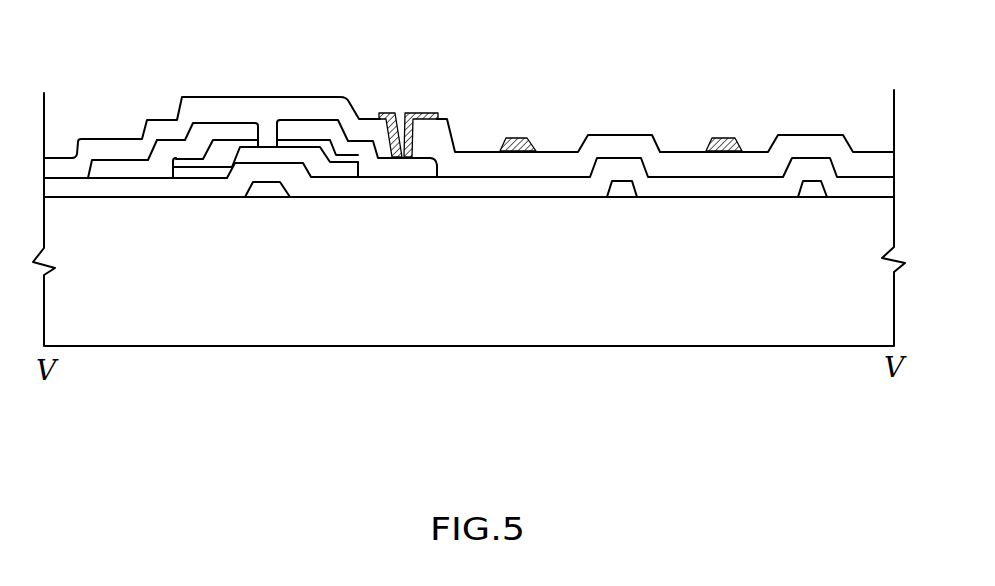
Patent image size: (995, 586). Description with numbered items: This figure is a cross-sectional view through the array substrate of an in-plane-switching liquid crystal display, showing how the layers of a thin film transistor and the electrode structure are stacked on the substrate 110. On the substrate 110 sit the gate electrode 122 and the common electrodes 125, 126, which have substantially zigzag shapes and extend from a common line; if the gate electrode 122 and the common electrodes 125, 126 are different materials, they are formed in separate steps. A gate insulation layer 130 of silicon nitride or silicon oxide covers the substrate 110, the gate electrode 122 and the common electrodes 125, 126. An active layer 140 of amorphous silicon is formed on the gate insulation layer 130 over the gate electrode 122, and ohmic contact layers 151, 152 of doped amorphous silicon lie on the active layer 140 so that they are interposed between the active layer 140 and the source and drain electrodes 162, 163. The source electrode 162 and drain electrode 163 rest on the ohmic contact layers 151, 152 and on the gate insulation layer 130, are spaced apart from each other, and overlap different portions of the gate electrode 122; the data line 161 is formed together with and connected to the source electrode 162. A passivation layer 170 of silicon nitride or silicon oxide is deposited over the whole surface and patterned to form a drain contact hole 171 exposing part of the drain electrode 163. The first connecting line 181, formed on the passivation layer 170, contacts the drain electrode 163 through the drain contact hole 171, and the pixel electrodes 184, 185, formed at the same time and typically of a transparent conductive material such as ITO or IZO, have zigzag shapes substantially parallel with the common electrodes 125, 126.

The substrate 110 is at (503, 328).
The gate electrode 122 is at (265, 188).
The common electrode 125 is at (623, 193).
The common electrode 126 is at (813, 187).
The gate insulation layer 130 is at (403, 187).
The active layer 140 is at (265, 155).
The ohmic contact layer 151 is at (176, 158).
The ohmic contact layer 152 is at (294, 140).
The data line 161 is at (145, 170).
The source electrode 162 is at (221, 127).
The drain electrode 163 is at (322, 125).
The passivation layer 170 is at (85, 139).
The drain contact hole 171 is at (400, 102).
The first connecting line 181 is at (433, 111).
The pixel electrode 184 is at (514, 139).
The pixel electrode 185 is at (724, 139).